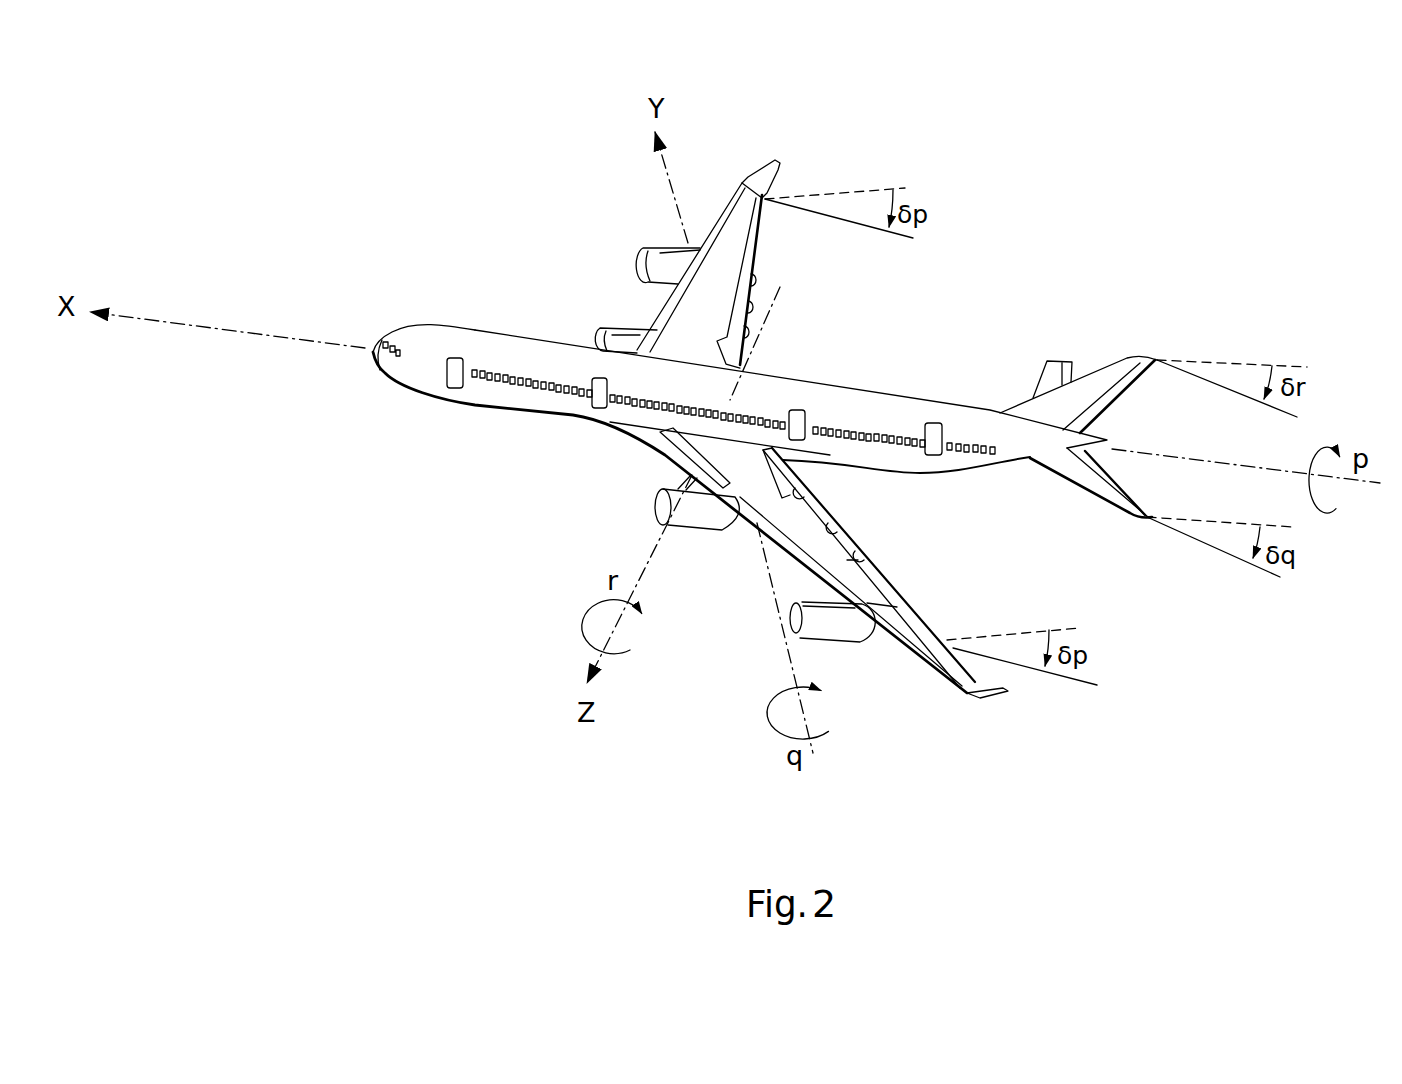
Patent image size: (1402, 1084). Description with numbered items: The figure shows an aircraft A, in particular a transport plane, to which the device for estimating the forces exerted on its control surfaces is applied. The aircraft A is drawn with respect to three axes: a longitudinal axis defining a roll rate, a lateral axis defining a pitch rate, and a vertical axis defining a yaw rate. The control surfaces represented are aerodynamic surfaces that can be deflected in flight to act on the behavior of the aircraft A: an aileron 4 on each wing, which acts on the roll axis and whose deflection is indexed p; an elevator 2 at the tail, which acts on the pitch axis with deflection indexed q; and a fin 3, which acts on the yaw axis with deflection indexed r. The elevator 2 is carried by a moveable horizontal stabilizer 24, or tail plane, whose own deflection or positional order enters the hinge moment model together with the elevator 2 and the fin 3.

The aircraft A is at (497, 410).
The elevator 2 is at (1077, 372).
The fin 3 is at (1117, 388).
The aileron 4 is at (767, 207).
The moveable horizontal stabilizer 24 is at (1047, 385).